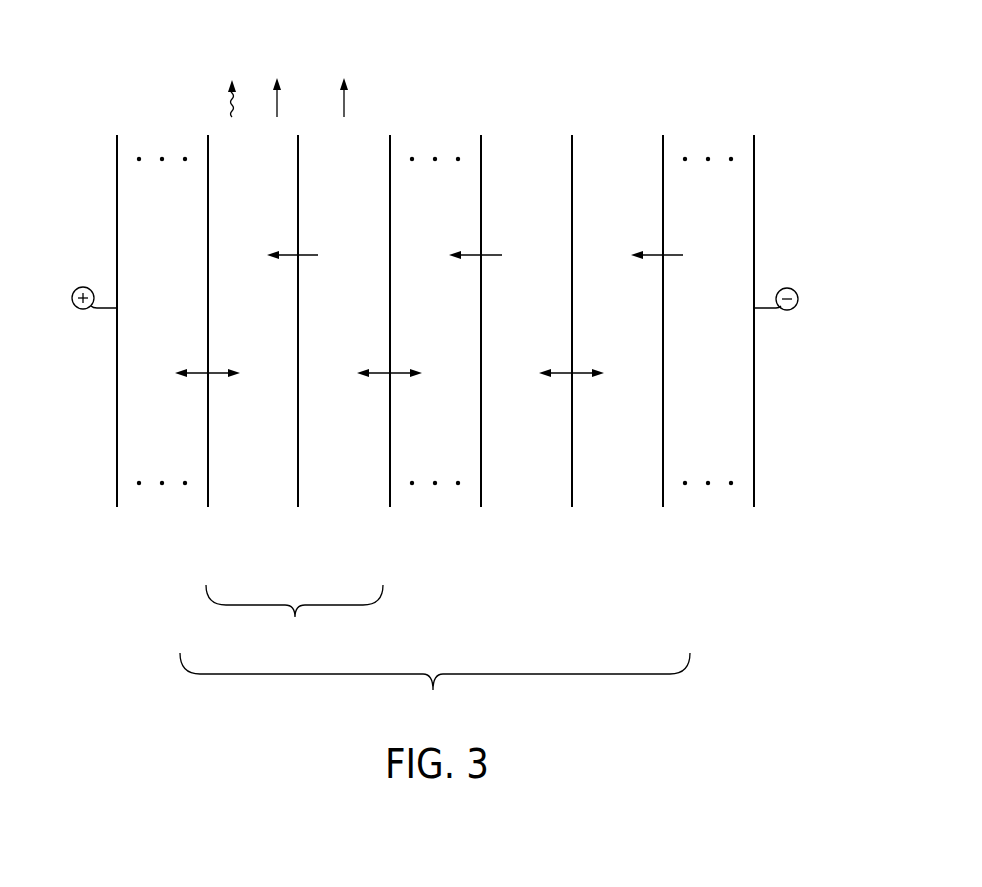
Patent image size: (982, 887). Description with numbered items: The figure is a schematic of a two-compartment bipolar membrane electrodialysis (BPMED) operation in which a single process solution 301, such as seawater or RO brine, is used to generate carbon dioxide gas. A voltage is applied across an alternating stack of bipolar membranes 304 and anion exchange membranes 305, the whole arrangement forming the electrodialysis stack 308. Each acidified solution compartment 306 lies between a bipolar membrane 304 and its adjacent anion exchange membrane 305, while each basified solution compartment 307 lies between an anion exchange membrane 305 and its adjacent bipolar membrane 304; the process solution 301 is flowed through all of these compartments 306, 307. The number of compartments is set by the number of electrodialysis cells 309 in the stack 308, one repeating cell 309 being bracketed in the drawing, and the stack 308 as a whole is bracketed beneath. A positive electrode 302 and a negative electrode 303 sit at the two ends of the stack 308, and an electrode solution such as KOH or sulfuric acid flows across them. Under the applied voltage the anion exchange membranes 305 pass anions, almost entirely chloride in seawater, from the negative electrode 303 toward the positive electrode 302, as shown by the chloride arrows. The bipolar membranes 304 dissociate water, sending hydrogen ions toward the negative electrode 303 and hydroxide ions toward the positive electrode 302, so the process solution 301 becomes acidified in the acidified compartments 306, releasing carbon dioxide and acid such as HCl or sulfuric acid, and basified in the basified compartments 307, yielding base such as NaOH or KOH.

The process solution 301 is at (262, 518).
The positive electrode 302 is at (84, 287).
The negative electrode 303 is at (785, 288).
The bipolar membrane (BPM) 304 is at (208, 490).
The anion exchange membrane (AEM) 305 is at (298, 490).
The acidified solution compartment 306 is at (282, 140).
The basified solution compartment 307 is at (372, 140).
The electrodialysis stack 308 is at (435, 687).
The electrodialysis cell 309 is at (294, 618).